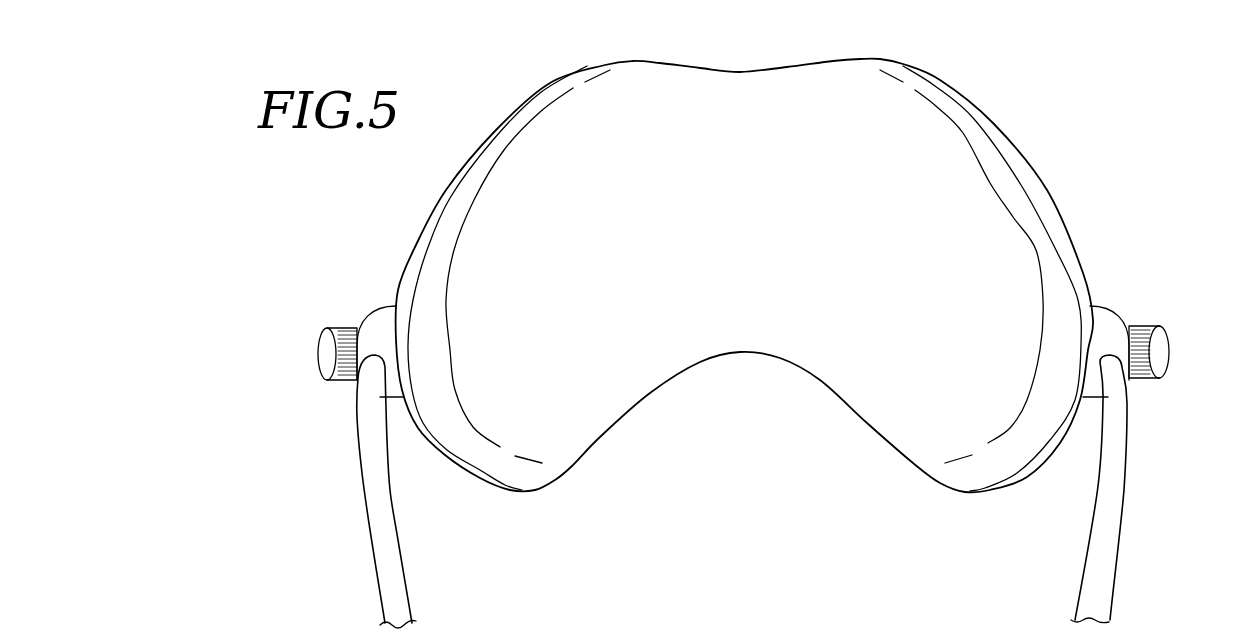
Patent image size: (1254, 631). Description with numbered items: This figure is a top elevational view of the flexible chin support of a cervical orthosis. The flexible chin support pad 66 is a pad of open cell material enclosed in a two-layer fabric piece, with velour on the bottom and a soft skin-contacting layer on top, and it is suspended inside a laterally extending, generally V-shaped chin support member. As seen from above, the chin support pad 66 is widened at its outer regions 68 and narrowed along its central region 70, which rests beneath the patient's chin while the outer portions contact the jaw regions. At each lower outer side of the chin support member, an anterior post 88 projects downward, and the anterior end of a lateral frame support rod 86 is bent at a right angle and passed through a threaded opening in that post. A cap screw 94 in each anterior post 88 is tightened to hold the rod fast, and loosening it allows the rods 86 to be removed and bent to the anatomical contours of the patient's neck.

The flexible chin support pad 66 is at (972, 185).
The outer regions 68 is at (525, 360).
The central region 70 is at (723, 322).
The lateral frame support rods 86 is at (380, 522).
The anterior posts 88 is at (383, 325).
The cap screws 94 is at (347, 333).